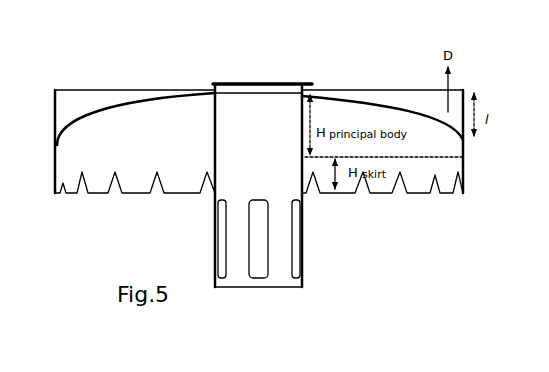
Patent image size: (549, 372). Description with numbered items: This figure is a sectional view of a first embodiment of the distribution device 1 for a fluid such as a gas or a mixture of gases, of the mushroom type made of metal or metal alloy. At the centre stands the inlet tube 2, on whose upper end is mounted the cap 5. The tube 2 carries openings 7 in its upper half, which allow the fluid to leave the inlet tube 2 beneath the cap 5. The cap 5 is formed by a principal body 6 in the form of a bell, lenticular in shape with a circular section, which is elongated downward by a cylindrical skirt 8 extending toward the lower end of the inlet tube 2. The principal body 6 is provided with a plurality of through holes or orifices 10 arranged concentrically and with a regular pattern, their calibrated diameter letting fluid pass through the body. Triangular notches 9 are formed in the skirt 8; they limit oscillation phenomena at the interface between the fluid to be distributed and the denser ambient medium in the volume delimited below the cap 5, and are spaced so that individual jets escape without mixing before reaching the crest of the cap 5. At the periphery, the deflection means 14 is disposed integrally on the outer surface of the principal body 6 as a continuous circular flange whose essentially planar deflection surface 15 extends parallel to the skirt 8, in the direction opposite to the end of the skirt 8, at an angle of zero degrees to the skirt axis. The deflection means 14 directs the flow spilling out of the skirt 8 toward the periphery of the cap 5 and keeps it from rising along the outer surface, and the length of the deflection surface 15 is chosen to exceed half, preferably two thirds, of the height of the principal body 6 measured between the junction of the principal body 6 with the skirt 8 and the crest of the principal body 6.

The distribution device 1 is at (119, 229).
The inlet tube 2 is at (232, 268).
The cap 5 is at (189, 74).
The principal body 6 is at (337, 100).
The openings 7 is at (262, 243).
The skirt 8 is at (468, 178).
The notches 9 is at (366, 194).
The orifices 10 is at (108, 107).
The deflection means 14 is at (55, 112).
The deflection surface 15 is at (472, 92).